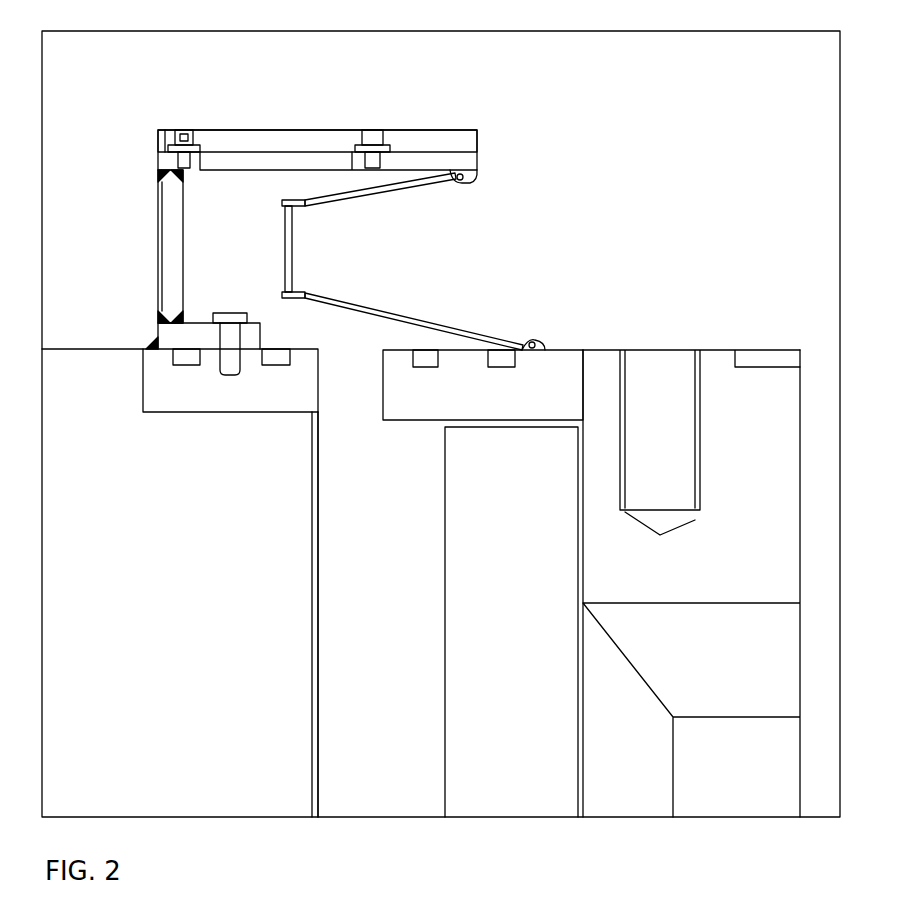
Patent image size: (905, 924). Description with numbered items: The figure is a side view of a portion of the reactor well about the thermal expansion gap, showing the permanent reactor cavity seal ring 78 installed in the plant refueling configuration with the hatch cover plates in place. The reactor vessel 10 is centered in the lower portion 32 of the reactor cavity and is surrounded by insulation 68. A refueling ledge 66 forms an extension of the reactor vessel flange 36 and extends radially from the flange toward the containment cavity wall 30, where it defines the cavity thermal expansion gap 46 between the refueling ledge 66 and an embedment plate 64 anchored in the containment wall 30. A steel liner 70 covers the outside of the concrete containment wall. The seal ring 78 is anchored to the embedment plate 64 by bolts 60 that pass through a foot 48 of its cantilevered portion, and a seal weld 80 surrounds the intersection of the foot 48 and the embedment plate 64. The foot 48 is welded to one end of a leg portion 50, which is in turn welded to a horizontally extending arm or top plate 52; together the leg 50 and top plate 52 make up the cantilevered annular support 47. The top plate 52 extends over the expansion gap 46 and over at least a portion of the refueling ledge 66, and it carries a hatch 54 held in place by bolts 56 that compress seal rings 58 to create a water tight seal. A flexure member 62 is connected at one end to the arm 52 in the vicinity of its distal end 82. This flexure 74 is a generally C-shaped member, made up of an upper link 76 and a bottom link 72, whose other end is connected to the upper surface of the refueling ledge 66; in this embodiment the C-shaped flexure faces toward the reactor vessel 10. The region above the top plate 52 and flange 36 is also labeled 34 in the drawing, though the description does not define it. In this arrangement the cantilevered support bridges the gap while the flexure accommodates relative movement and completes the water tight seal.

The reactor vessel 10 is at (738, 671).
The containment cavity wall 30 is at (187, 594).
The lower portion of the reactor cavity 32 is at (633, 746).
The space 34 is at (693, 129).
The reactor vessel flange 36 is at (722, 367).
The cavity thermal expansion gap 46 is at (395, 769).
The cantilevered annular support 47 is at (136, 136).
The foot 48 is at (160, 322).
The leg portion 50 is at (160, 225).
The top plate 52 is at (430, 130).
The hatch 54 is at (317, 135).
The bolts 56 is at (183, 130).
The seal rings 58 is at (190, 162).
The bolts 60 is at (232, 315).
The flexure member 62 is at (366, 295).
The embedment plate 64 is at (340, 332).
The refueling ledge 66 is at (415, 408).
The insulation 68 is at (455, 598).
The steel liner 70 is at (148, 349).
The bottom link 72 is at (447, 327).
The C-shaped flexure 74 is at (292, 260).
The upper link 76 is at (393, 187).
The permanent reactor cavity seal ring 78 is at (227, 118).
The seal weld 80 is at (158, 345).
The distal end 82 is at (480, 160).